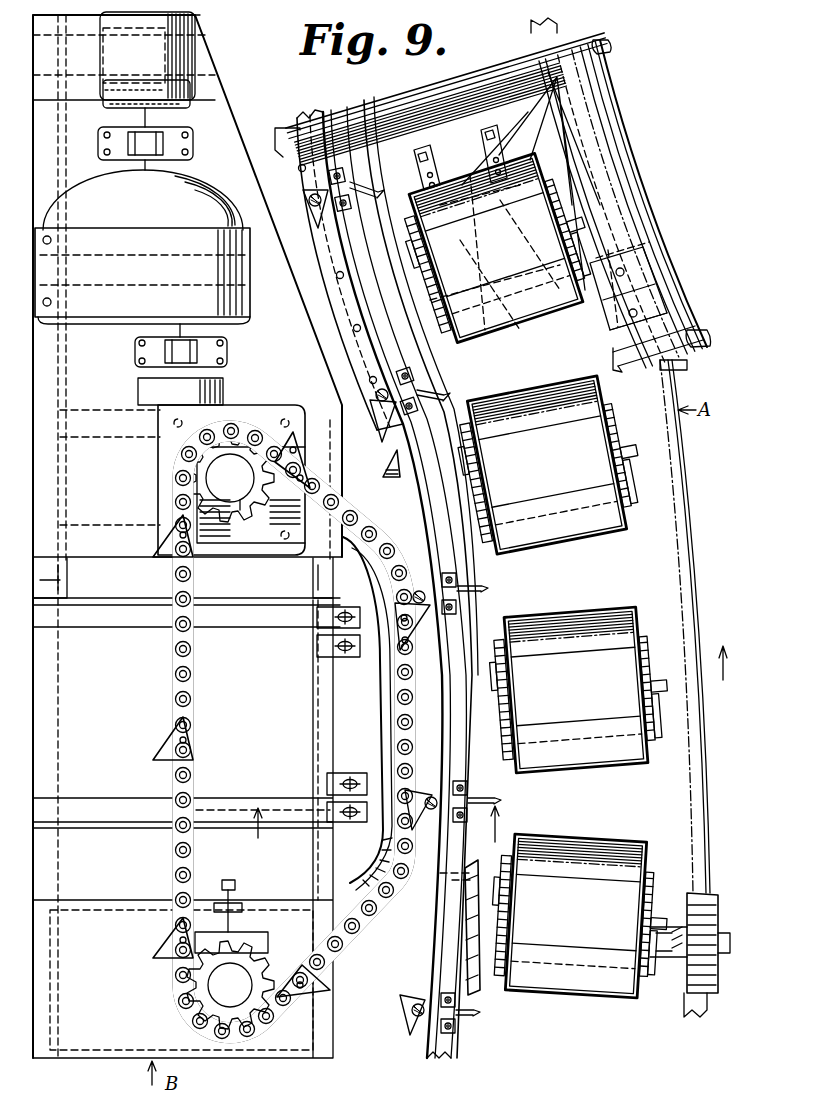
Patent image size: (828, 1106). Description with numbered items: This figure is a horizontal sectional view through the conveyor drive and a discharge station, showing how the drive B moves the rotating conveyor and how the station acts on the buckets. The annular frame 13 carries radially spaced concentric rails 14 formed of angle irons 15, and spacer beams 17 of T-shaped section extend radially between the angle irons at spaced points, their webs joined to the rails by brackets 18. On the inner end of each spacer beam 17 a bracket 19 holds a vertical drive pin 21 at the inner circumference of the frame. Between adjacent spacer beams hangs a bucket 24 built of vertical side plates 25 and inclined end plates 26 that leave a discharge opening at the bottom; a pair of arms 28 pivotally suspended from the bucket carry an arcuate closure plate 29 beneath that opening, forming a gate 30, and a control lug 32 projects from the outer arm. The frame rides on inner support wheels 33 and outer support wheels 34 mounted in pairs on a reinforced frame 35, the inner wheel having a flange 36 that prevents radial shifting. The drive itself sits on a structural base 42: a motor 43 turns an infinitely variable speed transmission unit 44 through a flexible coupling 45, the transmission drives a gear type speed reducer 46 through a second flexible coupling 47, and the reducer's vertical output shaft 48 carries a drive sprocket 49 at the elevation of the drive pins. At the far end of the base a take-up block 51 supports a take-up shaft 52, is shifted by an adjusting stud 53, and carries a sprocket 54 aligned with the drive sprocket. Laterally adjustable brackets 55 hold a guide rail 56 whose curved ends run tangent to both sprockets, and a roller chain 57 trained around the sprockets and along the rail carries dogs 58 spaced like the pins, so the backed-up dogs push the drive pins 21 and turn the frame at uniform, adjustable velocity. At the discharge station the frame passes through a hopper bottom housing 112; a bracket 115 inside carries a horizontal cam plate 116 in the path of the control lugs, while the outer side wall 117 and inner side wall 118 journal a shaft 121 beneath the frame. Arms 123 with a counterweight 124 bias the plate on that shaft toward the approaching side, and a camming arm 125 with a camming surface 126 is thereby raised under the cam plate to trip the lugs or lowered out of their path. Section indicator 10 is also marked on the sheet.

The section line 10 is at (377, 820).
The annular frame 13 is at (417, 511).
The rails 14 is at (422, 540).
The angle irons 15 is at (452, 540).
The spacer beams 17 is at (380, 186).
The brackets 18 is at (346, 208).
The bracket 19 is at (322, 222).
The drive pin 21 is at (309, 200).
The bucket 24 is at (530, 322).
The side plates 25 is at (532, 158).
The end plates 26 is at (595, 168).
The arms 28 is at (578, 233).
The closure plate 29 is at (448, 255).
The gate 30 is at (408, 236).
The control lug 32 is at (574, 216).
The inner support wheels 33 is at (444, 872).
The outer support wheels 34 is at (708, 908).
The frame 35 is at (664, 958).
The flange 36 is at (465, 945).
The base 42 is at (58, 655).
The motor 43 is at (105, 108).
The infinitely variable speed transmission unit 44 is at (80, 195).
The flexible coupling 45 is at (165, 158).
The gear type speed reducer 46 is at (250, 410).
The flexible coupling 47 is at (140, 348).
The output shaft 48 is at (215, 478).
The drive sprocket 49 is at (255, 515).
The take-up block 51 is at (258, 930).
The take-up shaft 52 is at (222, 993).
The adjusting stud 53 is at (232, 890).
The sprocket 54 is at (270, 968).
The brackets 55 is at (340, 660).
The guide rail 56 is at (382, 720).
The roller chain 57 is at (175, 490).
The dogs 58 is at (382, 470).
The hopper bottom housing 112 is at (628, 146).
The bracket 115 is at (626, 275).
The cam plate 116 is at (640, 300).
The outer side wall 117 is at (572, 142).
The inner side wall 118 is at (340, 300).
The shaft 121 is at (600, 190).
The arms 123 is at (410, 118).
The counterweight 124 is at (442, 110).
The camming arm 125 is at (614, 360).
The camming surface 126 is at (613, 365).